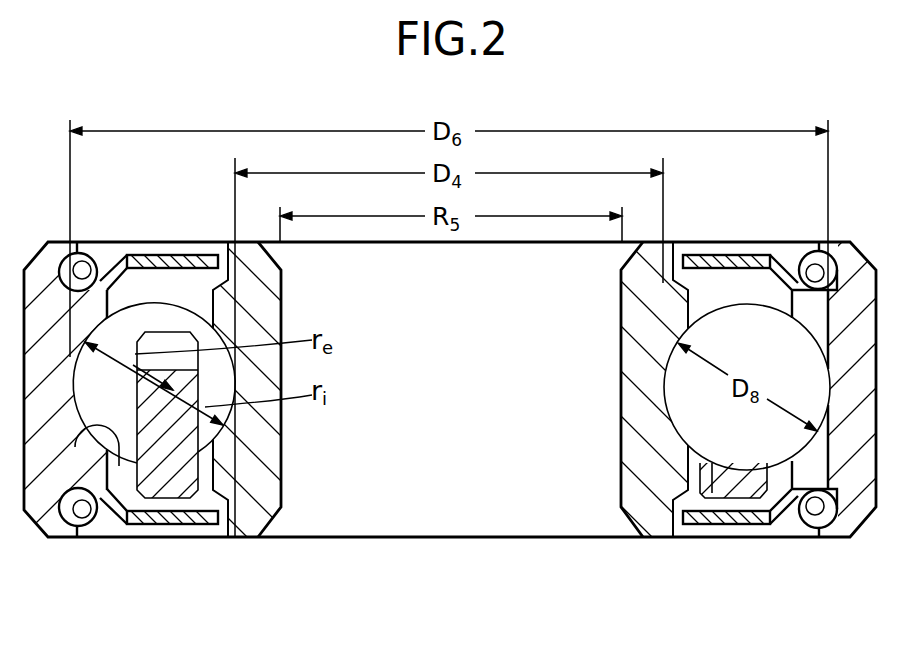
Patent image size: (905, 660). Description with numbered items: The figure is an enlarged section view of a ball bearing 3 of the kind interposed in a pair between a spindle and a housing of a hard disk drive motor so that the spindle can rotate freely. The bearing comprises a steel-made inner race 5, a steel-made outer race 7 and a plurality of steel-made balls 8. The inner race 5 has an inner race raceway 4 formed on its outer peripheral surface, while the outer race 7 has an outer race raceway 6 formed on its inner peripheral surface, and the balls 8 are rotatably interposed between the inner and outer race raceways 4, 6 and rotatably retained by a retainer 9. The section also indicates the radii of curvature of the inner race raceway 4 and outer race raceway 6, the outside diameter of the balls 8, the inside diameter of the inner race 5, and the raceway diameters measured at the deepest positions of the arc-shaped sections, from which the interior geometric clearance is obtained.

The ball bearing 3 is at (764, 549).
The inner race raceway 4 is at (663, 412).
The inner race 5 is at (637, 450).
The outer race raceway 6 is at (117, 465).
The outer race 7 is at (36, 513).
The balls 8 is at (203, 437).
The retainer 9 is at (163, 483).